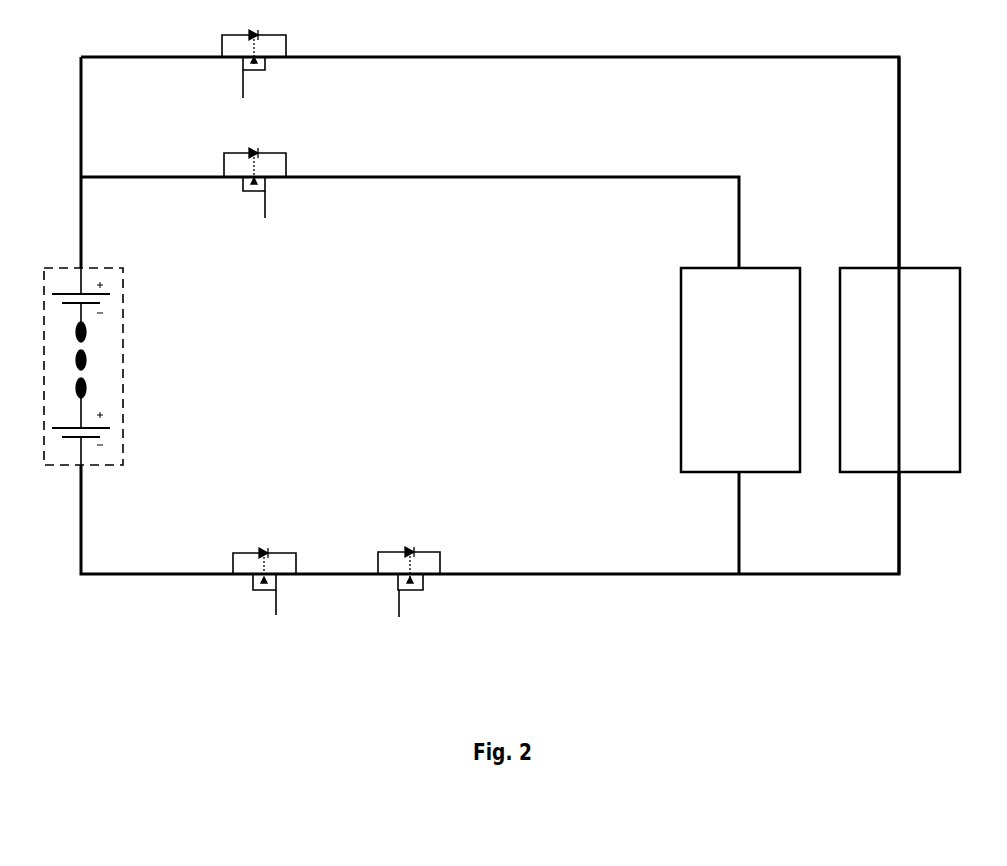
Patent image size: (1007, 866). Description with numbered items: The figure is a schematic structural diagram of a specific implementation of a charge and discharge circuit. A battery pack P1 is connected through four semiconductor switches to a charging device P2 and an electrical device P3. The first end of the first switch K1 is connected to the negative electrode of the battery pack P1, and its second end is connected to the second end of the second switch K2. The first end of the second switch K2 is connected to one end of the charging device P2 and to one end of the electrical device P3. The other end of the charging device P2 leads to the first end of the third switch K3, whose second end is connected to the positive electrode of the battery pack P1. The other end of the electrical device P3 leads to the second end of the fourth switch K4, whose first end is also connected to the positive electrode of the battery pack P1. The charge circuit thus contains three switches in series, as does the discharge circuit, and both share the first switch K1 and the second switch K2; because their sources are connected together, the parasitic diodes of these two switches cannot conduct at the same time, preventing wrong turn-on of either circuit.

The first switch K1 is at (264, 567).
The second switch K2 is at (409, 568).
The third switch K3 is at (254, 79).
The fourth switch K4 is at (255, 197).
The battery pack P1 is at (122, 322).
The charging device P2 is at (900, 370).
The electrical device P3 is at (740, 370).